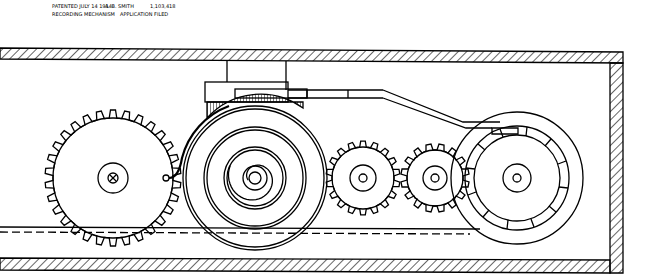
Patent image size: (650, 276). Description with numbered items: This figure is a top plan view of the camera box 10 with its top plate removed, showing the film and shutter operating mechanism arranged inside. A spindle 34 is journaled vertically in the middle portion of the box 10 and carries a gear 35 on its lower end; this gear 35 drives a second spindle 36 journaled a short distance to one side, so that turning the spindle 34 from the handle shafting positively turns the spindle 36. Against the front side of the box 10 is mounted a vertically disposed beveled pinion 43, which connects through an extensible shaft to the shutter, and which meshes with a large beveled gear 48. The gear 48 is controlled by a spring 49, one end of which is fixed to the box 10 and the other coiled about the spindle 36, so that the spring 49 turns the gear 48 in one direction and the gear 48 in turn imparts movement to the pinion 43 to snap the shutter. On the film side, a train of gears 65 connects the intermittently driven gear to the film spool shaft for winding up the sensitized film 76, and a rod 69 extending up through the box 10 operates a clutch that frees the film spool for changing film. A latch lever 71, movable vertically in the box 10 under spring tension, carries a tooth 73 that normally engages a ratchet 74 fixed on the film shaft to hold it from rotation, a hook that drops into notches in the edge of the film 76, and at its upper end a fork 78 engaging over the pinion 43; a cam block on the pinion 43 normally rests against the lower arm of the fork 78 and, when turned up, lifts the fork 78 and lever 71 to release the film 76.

The box 10 is at (389, 50).
The spindle 34 is at (98, 178).
The gear 35 is at (54, 144).
The second spindle 36 is at (258, 184).
The pinion 43 is at (309, 91).
The beveled gear 48 is at (206, 128).
The spring 49 is at (199, 184).
The train of gears 65 is at (393, 152).
The rod 69 is at (526, 178).
The latch lever 71 is at (413, 112).
The tooth 73 is at (510, 128).
The ratchet 74 is at (546, 136).
The sensitized film 76 is at (349, 233).
The fork 78 is at (247, 93).